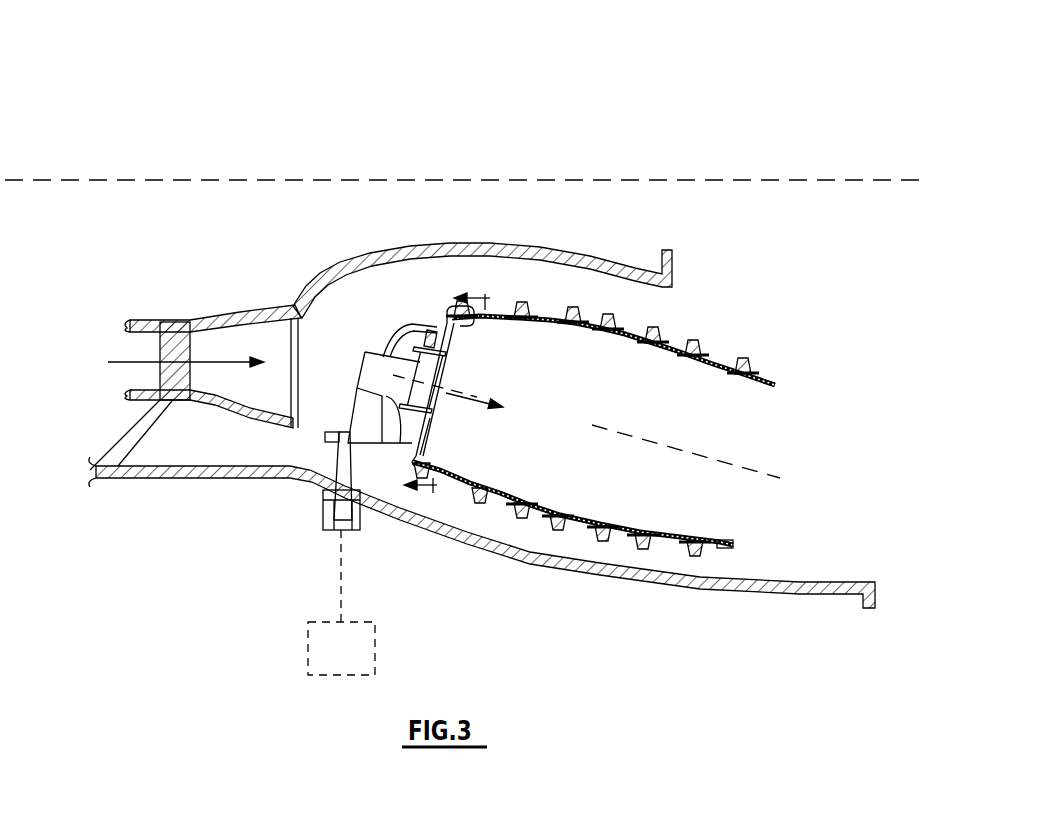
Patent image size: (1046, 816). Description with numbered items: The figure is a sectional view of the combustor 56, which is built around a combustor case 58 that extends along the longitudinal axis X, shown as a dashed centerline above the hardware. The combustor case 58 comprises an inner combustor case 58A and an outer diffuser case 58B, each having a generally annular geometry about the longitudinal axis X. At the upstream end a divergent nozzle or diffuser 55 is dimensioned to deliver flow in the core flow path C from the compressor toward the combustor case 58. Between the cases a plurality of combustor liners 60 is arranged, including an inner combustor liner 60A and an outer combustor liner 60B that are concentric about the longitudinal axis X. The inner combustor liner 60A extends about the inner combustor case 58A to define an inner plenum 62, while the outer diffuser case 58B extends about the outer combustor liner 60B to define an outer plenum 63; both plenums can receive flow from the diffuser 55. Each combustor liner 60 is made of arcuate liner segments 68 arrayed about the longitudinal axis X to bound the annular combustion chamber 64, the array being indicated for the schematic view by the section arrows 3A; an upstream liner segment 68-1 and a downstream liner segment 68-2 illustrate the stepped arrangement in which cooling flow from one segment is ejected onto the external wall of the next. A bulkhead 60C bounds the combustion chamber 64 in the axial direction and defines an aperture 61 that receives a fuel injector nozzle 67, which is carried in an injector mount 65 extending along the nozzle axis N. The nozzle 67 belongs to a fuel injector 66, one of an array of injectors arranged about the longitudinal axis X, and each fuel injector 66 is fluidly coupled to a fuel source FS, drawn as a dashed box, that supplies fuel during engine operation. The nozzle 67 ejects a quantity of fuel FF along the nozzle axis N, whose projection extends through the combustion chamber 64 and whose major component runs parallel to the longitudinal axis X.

The combustor 56 is at (151, 68).
The diffuser 55 is at (213, 320).
The inner combustor case 58A is at (497, 242).
The combustor case 58 is at (482, 532).
The outer diffuser case 58B is at (241, 491).
The combustor liners 60 is at (613, 305).
The inner combustor liner 60A is at (613, 305).
The outer combustor liner 60B is at (573, 551).
The bulkhead 60C is at (460, 314).
The inner plenum 62 is at (608, 304).
The outer plenum 63 is at (549, 551).
The combustion chamber 64 is at (614, 494).
The injector mount 65 is at (497, 424).
The fuel injector 66 is at (364, 349).
The fuel injector nozzle 67 is at (445, 366).
The aperture 61 is at (434, 426).
The liner segments 68 is at (690, 350).
The upstream liner segment 68-1 is at (433, 460).
The downstream liner segment 68-2 is at (486, 498).
The section indicator 3A is at (447, 384).
The core flow path C is at (122, 358).
The fuel FF is at (460, 392).
The nozzle axis N is at (747, 467).
The longitudinal axis X is at (772, 180).
The fuel source FS is at (357, 664).